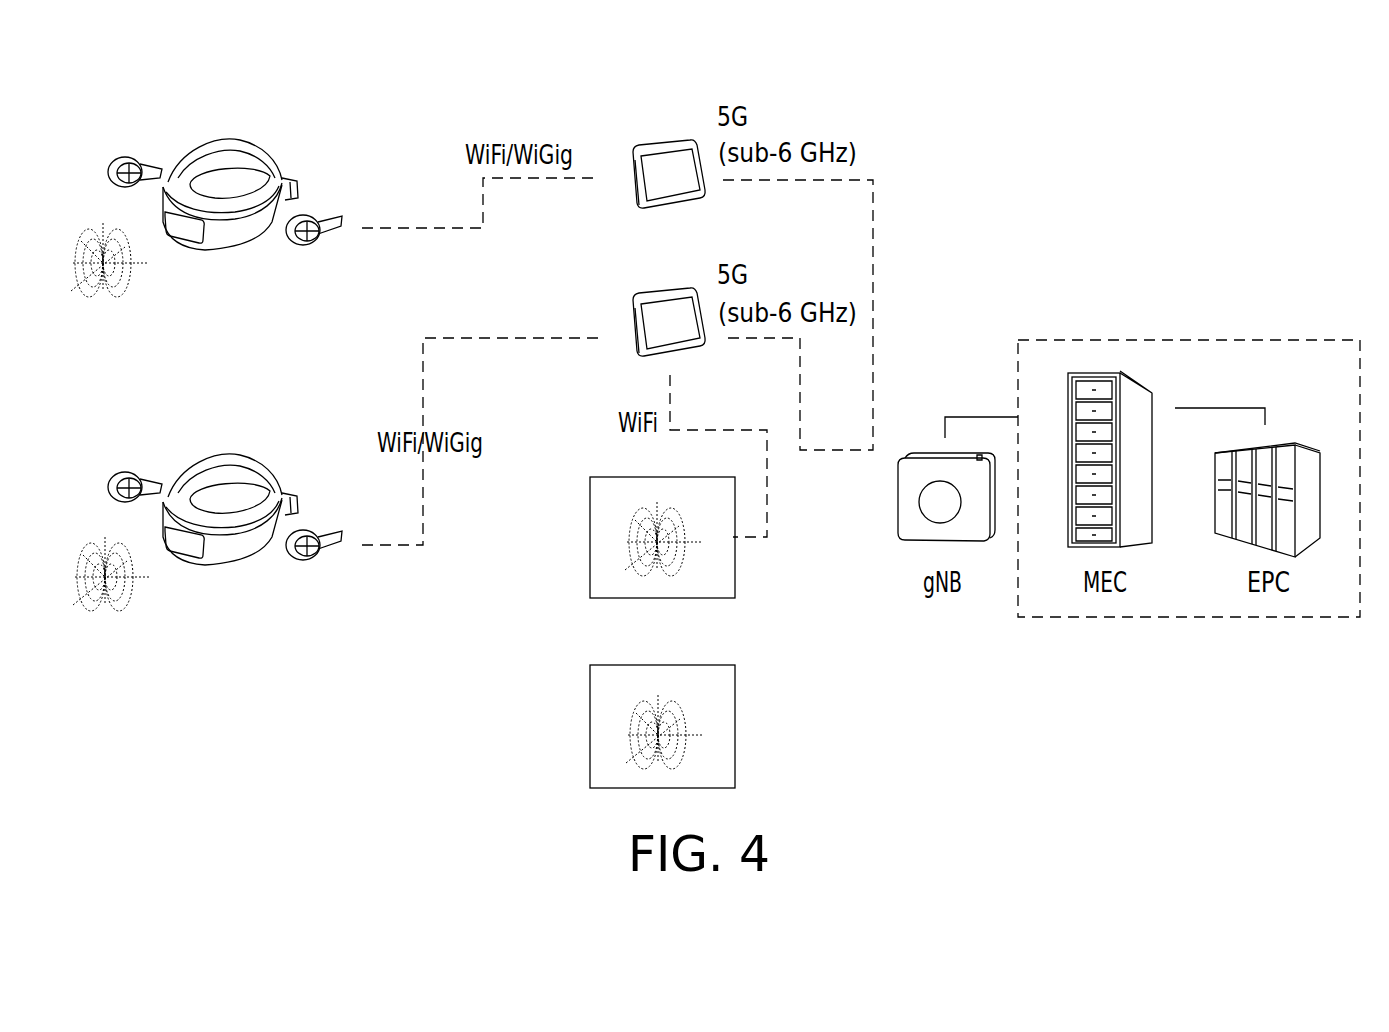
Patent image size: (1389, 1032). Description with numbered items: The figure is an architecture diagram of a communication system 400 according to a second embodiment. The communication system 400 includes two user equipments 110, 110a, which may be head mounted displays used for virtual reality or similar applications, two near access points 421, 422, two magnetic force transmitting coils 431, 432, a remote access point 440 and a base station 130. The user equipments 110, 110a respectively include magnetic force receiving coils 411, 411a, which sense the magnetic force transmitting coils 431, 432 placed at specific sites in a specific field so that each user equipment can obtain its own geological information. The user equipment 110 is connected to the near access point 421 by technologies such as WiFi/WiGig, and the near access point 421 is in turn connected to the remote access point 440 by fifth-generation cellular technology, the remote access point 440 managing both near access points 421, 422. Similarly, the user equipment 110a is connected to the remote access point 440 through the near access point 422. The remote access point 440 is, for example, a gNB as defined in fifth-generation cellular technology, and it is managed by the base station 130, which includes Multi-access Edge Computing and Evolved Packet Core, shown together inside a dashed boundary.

The user equipment 110 is at (227, 140).
The user equipment 110a is at (227, 455).
The magnetic force receiving coil 411 is at (90, 227).
The magnetic force receiving coil 411a is at (90, 545).
The near access point 421 is at (653, 140).
The near access point 422 is at (653, 288).
The magnetic force transmitting coil 431 is at (590, 538).
The magnetic force transmitting coil 432 is at (590, 727).
The remote access point 440 is at (900, 508).
The base station 130 is at (1075, 340).
The communication system 400 is at (347, 716).